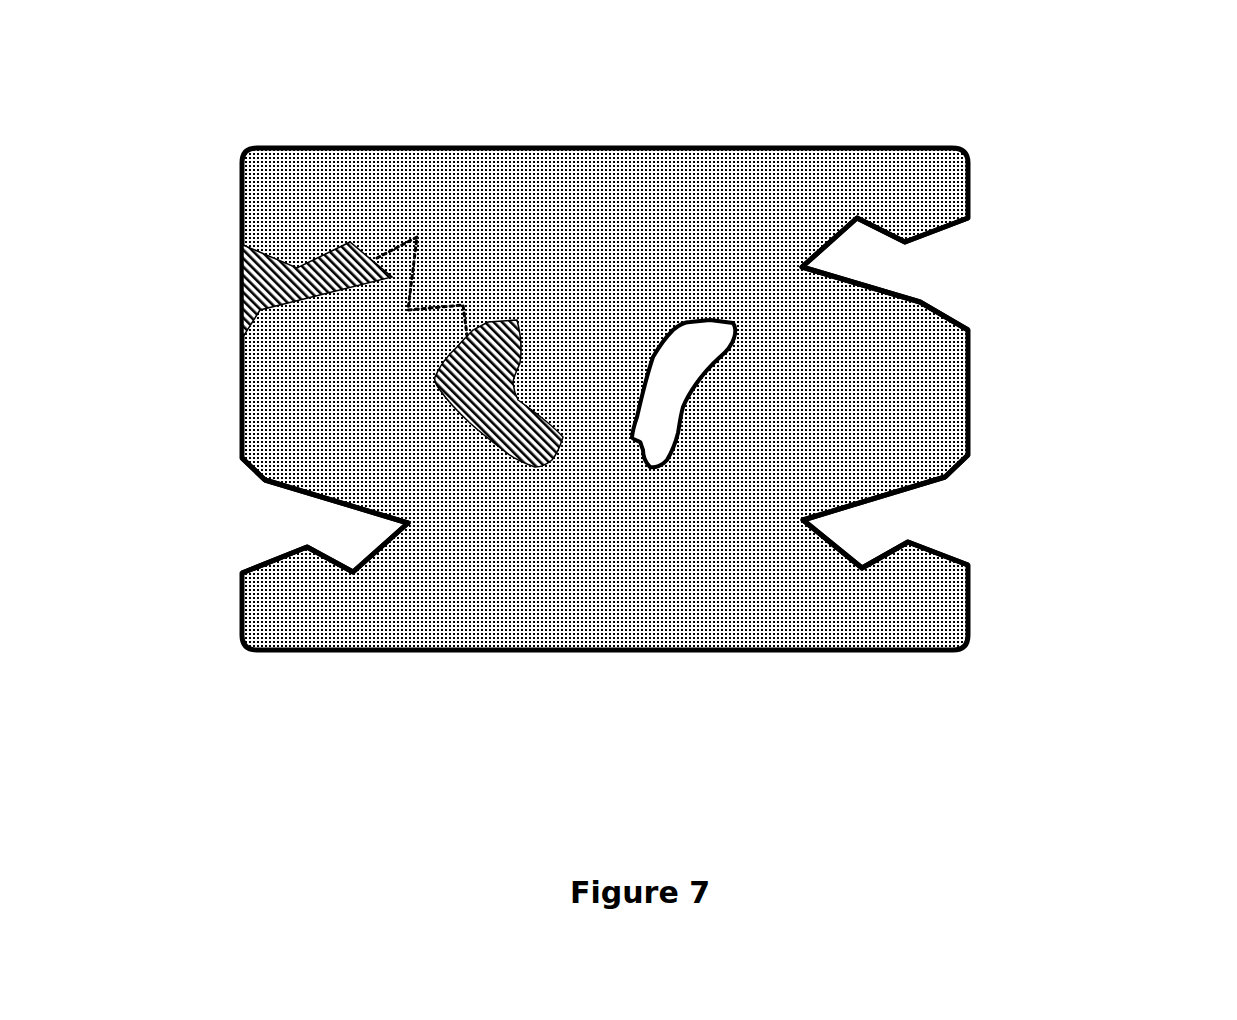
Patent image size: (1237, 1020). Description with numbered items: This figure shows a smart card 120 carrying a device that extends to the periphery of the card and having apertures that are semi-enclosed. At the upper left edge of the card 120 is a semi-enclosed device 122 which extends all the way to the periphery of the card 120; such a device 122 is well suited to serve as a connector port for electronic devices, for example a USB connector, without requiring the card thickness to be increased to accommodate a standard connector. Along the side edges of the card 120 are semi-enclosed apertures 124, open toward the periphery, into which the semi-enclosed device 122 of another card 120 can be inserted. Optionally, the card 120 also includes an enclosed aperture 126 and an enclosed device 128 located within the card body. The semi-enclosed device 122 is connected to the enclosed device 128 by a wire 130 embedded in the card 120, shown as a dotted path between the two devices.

The card 120 is at (523, 147).
The semi-enclosed device 122 is at (242, 287).
The semi-enclosed apertures 124 is at (917, 300).
The enclosed aperture 126 is at (712, 320).
The enclosed device 128 is at (487, 322).
The wire 130 is at (418, 313).